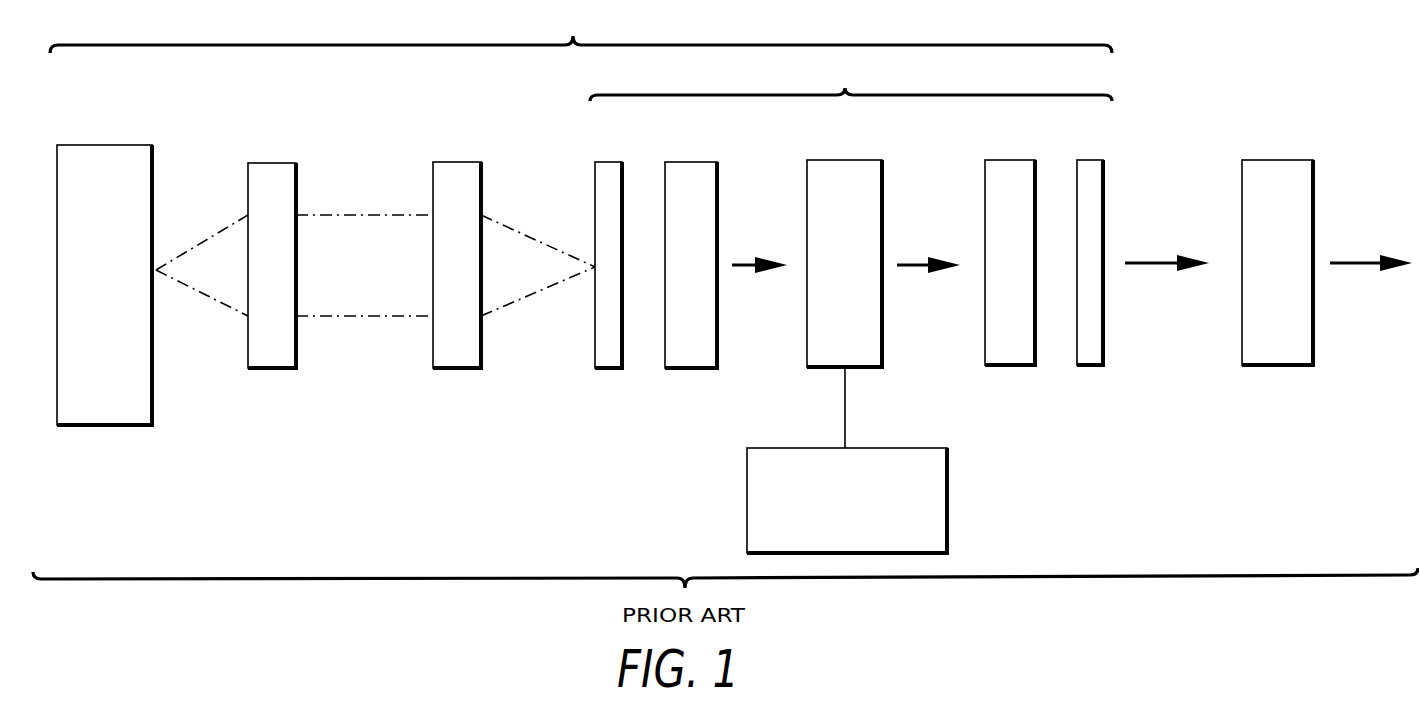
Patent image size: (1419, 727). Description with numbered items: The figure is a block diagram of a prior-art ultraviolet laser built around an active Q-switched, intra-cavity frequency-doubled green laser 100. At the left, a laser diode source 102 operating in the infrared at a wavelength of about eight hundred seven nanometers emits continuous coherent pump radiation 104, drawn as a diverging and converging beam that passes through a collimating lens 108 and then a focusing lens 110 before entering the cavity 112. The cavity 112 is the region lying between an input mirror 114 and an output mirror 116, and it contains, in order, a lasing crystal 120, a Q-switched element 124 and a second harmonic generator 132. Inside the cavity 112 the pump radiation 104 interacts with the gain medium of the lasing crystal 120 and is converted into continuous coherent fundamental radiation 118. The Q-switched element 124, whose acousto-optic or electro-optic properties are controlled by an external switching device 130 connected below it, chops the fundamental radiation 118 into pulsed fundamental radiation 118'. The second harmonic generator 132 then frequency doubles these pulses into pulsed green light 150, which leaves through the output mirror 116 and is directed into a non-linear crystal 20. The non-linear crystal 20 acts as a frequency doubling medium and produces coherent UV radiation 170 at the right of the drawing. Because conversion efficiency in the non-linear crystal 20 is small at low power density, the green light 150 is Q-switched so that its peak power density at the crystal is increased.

The non-linear crystal 20 is at (1282, 160).
The green laser 100 is at (581, 30).
The laser diode source 102 is at (128, 145).
The pump radiation 104 is at (228, 312).
The collimating lens 108 is at (270, 163).
The focusing lens 110 is at (465, 162).
The cavity 112 is at (851, 80).
The input mirror 114 is at (606, 162).
The output mirror 116 is at (1090, 160).
The fundamental radiation 118 is at (759, 284).
The pulsed fundamental radiation 118' is at (931, 284).
The lasing crystal 120 is at (695, 162).
The Q-switched element 124 is at (853, 160).
The external switching device 130 is at (949, 492).
The second harmonic generator 132 is at (1000, 160).
The green light 150 is at (1155, 265).
The UV radiation 170 is at (1360, 265).